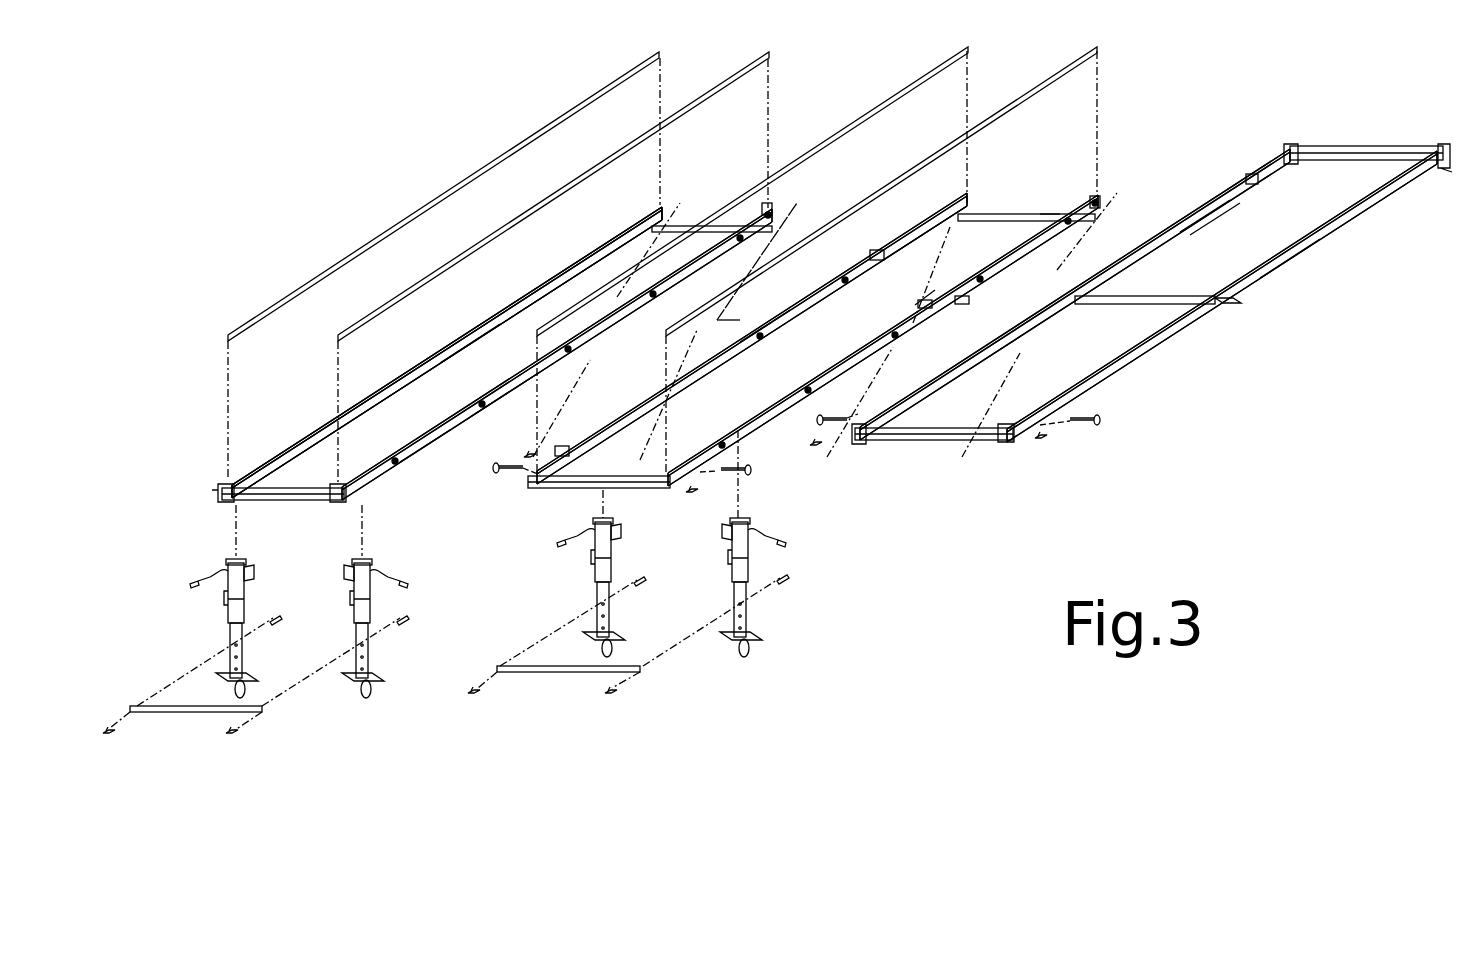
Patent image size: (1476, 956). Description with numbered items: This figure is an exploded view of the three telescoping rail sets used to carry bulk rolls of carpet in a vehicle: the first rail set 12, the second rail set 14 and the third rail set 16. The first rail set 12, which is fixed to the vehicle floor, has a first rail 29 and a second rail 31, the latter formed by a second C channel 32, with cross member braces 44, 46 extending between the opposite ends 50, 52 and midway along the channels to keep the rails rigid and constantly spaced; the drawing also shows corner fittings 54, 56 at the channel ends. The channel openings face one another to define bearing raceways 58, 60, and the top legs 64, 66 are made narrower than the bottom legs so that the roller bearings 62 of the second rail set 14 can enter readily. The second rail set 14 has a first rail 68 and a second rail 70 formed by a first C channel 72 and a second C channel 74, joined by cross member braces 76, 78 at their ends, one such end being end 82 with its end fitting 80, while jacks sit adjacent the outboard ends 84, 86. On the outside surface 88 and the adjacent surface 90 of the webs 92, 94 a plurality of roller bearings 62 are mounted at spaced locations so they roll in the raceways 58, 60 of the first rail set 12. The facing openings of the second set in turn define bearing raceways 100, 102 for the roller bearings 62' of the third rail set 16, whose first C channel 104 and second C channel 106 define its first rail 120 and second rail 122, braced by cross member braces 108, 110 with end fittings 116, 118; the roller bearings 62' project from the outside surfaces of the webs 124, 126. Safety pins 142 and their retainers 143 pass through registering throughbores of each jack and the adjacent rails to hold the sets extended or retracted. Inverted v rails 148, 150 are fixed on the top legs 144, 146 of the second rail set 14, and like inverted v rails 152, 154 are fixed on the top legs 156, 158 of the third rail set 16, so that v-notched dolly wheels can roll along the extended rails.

The first rail set 12 is at (1338, 252).
The second rail set 14 is at (778, 445).
The third rail set 16 is at (457, 324).
The first rail 29 is at (1300, 262).
The second rail 31 is at (1215, 200).
The second C channel 32 is at (1240, 195).
The cross member brace 44 is at (1395, 148).
The cross member brace 46 is at (1158, 298).
The opposite end 50 is at (1440, 158).
The opposite end 52 is at (1080, 426).
The corner bracket 54 is at (1287, 144).
The bolt 56 is at (867, 402).
The bearing raceway 58 is at (1003, 426).
The bearing raceway 60 is at (845, 457).
The roller bearings 62 is at (831, 324).
The roller bearings 62' is at (438, 443).
The top leg 64 is at (1320, 230).
The top leg 66 is at (1175, 230).
The first rail 68 is at (970, 302).
The second rail 70 is at (777, 320).
The first C channel 72 is at (923, 320).
The second C channel 74 is at (755, 338).
The cross member brace 76 is at (1040, 213).
The cross member brace 78 is at (565, 490).
The end bracket 80 is at (1082, 205).
The opposite end 82 is at (972, 208).
The outboard end 84 is at (637, 497).
The outboard end 86 is at (530, 453).
The outside surface 88 is at (762, 420).
The left side rail 90 is at (575, 486).
The web 92 is at (857, 345).
The web 94 is at (563, 452).
The bearing raceway 100 is at (628, 530).
The bearing raceway 102 is at (522, 492).
The first C channel 104 is at (435, 422).
The second C channel 106 is at (415, 360).
The cross member brace 108 is at (740, 193).
The cross member brace 110 is at (280, 502).
The corner bracket 116 is at (337, 502).
The corner bracket 118 is at (214, 490).
The first rail 120 is at (417, 420).
The second rail 122 is at (311, 416).
The web 124 is at (493, 393).
The web 126 is at (577, 250).
The safety pins 142 is at (752, 473).
The nut 143 is at (690, 495).
The top leg 144 is at (935, 296).
The top leg 146 is at (930, 223).
The inverted v rail 148 is at (925, 147).
The inverted v rail 150 is at (928, 62).
The inverted v rail 152 is at (512, 222).
The inverted v rail 154 is at (455, 185).
The top leg 156 is at (577, 353).
The top leg 158 is at (487, 320).